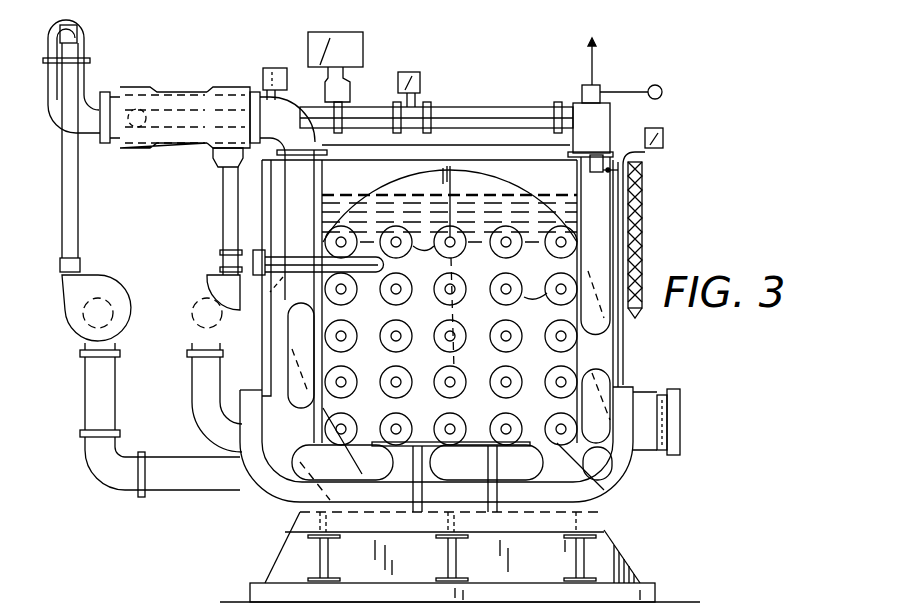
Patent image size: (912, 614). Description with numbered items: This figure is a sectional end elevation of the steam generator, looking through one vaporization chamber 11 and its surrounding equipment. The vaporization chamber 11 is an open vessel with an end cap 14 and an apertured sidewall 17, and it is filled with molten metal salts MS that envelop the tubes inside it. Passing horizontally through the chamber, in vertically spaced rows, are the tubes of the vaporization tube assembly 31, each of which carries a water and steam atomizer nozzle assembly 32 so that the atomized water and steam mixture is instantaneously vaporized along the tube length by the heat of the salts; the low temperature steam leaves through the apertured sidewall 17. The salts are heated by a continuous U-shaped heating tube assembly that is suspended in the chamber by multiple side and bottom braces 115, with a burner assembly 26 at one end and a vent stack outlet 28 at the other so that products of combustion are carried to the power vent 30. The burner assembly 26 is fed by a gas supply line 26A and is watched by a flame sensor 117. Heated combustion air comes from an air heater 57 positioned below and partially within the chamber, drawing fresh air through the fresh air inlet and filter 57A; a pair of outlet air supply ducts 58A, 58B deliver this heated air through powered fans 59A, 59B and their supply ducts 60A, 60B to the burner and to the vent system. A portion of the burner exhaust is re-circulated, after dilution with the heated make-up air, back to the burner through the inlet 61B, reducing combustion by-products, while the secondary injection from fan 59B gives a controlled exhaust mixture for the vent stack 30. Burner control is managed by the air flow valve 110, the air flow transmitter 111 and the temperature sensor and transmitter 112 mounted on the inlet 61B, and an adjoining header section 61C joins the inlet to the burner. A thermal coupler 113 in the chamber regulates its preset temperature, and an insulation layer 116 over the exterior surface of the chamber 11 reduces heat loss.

The vaporization chamber 11 is at (638, 126).
The end cap 14 is at (557, 196).
The apertured sidewall 17 is at (348, 187).
The molten metal salts MS is at (477, 195).
The burner assembly 26 is at (587, 128).
The gas supply line 26A is at (633, 142).
The vent stack outlet 28 is at (317, 148).
The power vent 30 is at (160, 82).
The vaporization tube assembly 31 is at (452, 240).
The vaporization tube assembly 32 is at (430, 240).
The air heater 57 is at (640, 507).
The fresh air inlet and filter 57A is at (680, 421).
The outlet air supply duct 58A is at (185, 474).
The outlet air supply duct 58B is at (212, 420).
The powered fan 59A is at (128, 300).
The powered fan 59B is at (197, 292).
The supply duct 60A is at (66, 215).
The supply duct 60B is at (230, 232).
The burner inlet 61B is at (483, 113).
The header pipe elbow section 61C is at (228, 88).
The air flow valve 110 is at (413, 82).
The air flow transmitter 111 is at (350, 50).
The temperature sensor and transmitter 112 is at (273, 68).
The thermal coupler 113 is at (266, 282).
The side and bottom braces 115 is at (604, 486).
The insulation layer 116 is at (645, 234).
The flame sensor 117 is at (663, 133).